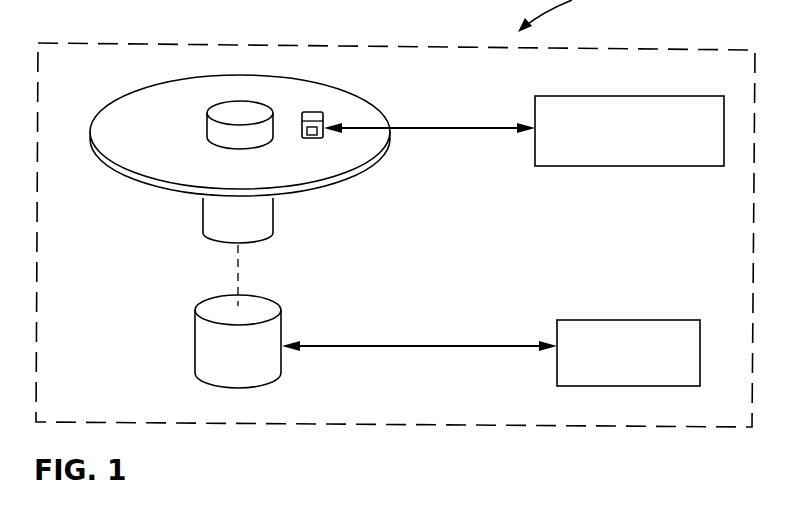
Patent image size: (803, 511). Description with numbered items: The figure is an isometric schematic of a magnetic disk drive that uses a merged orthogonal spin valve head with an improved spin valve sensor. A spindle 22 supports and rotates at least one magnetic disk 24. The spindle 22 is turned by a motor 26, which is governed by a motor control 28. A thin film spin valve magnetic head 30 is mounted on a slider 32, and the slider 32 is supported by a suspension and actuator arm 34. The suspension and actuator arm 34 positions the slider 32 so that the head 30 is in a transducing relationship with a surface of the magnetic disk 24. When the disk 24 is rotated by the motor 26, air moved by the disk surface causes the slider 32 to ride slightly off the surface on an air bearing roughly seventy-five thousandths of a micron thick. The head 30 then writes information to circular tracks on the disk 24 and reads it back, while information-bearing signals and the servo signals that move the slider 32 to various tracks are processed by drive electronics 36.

The spindle 22 is at (205, 238).
The magnetic disk 24 is at (143, 92).
The motor 26 is at (195, 342).
The motor control 28 is at (672, 320).
The thin film spin valve magnetic head 30 is at (312, 138).
The slider 32 is at (323, 113).
The suspension and actuator arm 34 is at (447, 130).
The drive electronics 36 is at (571, 166).